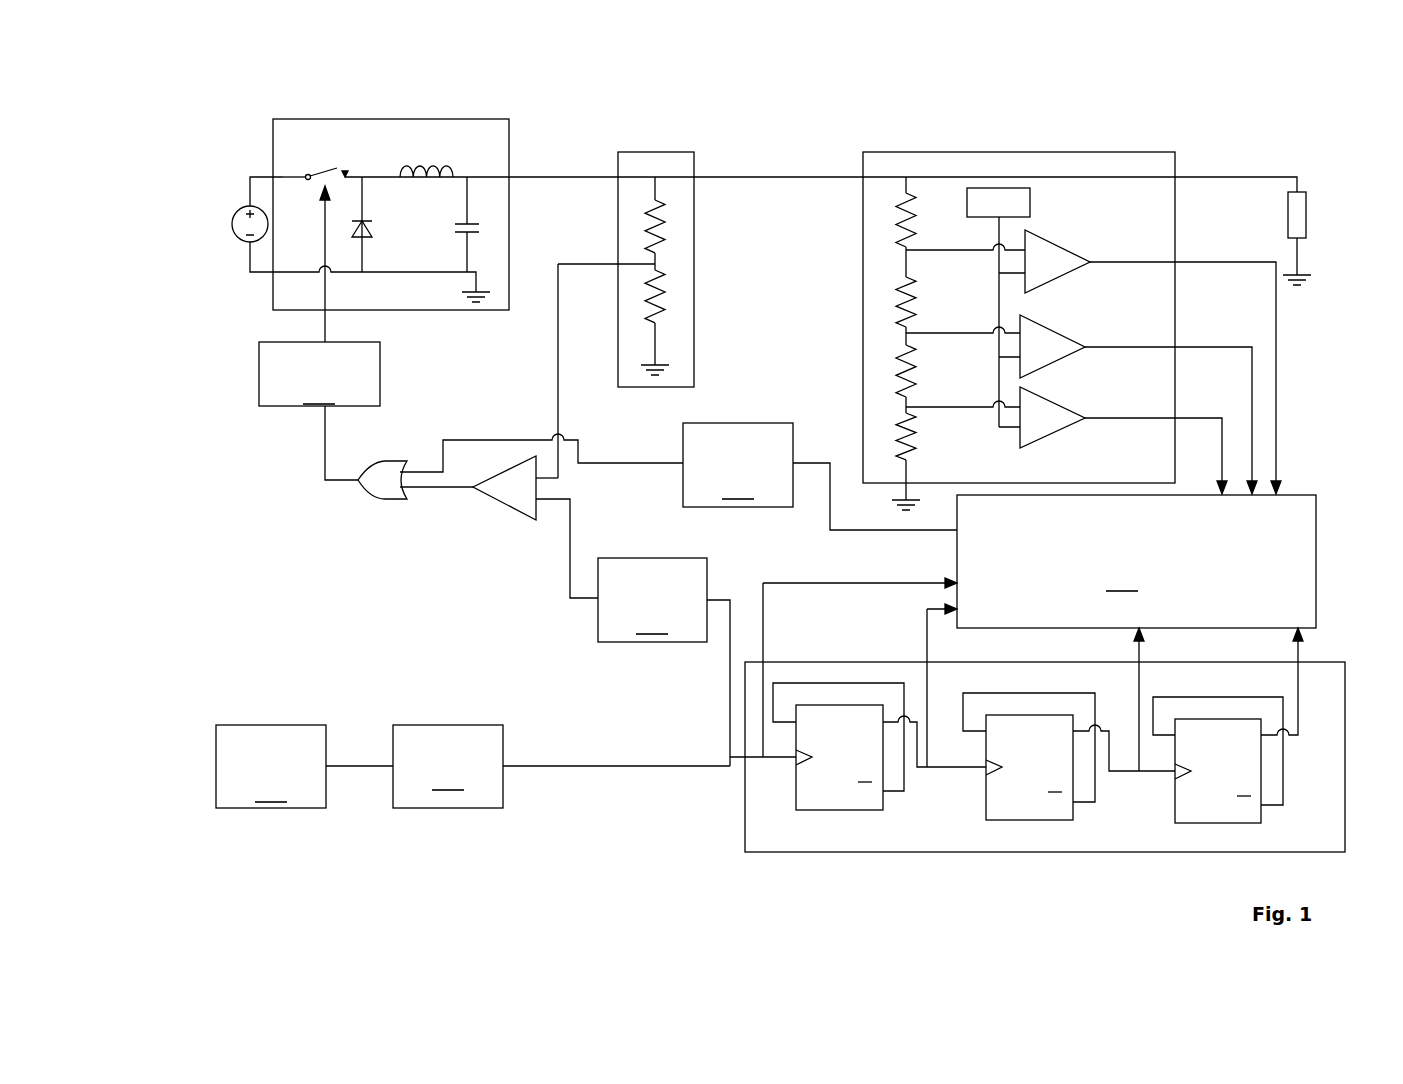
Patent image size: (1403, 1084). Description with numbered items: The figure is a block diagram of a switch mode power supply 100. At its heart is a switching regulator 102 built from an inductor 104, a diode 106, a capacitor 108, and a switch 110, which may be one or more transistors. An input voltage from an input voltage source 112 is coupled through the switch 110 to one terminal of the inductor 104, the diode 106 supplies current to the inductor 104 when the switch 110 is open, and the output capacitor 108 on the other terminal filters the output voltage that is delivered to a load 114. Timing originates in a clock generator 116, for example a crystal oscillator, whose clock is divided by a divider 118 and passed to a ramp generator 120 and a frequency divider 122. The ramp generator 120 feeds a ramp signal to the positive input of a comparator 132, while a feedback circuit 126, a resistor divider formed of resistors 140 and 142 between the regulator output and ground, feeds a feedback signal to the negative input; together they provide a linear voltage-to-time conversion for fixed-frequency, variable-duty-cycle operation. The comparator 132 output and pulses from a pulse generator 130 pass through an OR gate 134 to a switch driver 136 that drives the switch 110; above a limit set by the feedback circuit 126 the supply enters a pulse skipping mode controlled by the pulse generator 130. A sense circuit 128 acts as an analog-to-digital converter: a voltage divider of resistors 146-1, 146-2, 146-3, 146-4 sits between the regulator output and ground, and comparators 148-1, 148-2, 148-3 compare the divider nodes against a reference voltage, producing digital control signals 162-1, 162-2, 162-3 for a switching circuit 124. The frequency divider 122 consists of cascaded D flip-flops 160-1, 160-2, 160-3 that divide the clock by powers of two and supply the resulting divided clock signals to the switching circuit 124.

The switch mode power supply 100 is at (1332, 154).
The switching regulator 102 is at (509, 158).
The inductor 104 is at (395, 162).
The diode 106 is at (372, 229).
The capacitor 108 is at (455, 227).
The switch 110 is at (318, 169).
The input voltage source 112 is at (232, 235).
The load 114 is at (1288, 200).
The clock generator 116 is at (304, 766).
The divider 118 is at (594, 766).
The ramp generator 120 is at (664, 662).
The frequency divider 122 is at (745, 793).
The switching circuit 124 is at (1136, 561).
The feedback circuit 126 is at (644, 269).
The sense circuit 128 is at (1026, 331).
The pulse generator 130 is at (820, 476).
The comparator 132 is at (484, 494).
The OR gate 134 is at (362, 484).
The switch driver 136 is at (319, 373).
The resistor 140 is at (664, 239).
The resistor 142 is at (664, 301).
The resistor 146-1 is at (897, 197).
The resistor 146-2 is at (897, 283).
The resistor 146-3 is at (897, 349).
The resistor 146-4 is at (897, 416).
The comparator 148-1 is at (1074, 250).
The comparator 148-2 is at (1070, 333).
The comparator 148-3 is at (1072, 404).
The D flip-flop 160-1 is at (808, 811).
The D flip-flop 160-2 is at (995, 820).
The D flip-flop 160-3 is at (1175, 803).
The digital control signal 162-1 is at (1095, 262).
The digital control signal 162-2 is at (1095, 347).
The digital control signal 162-3 is at (1095, 418).